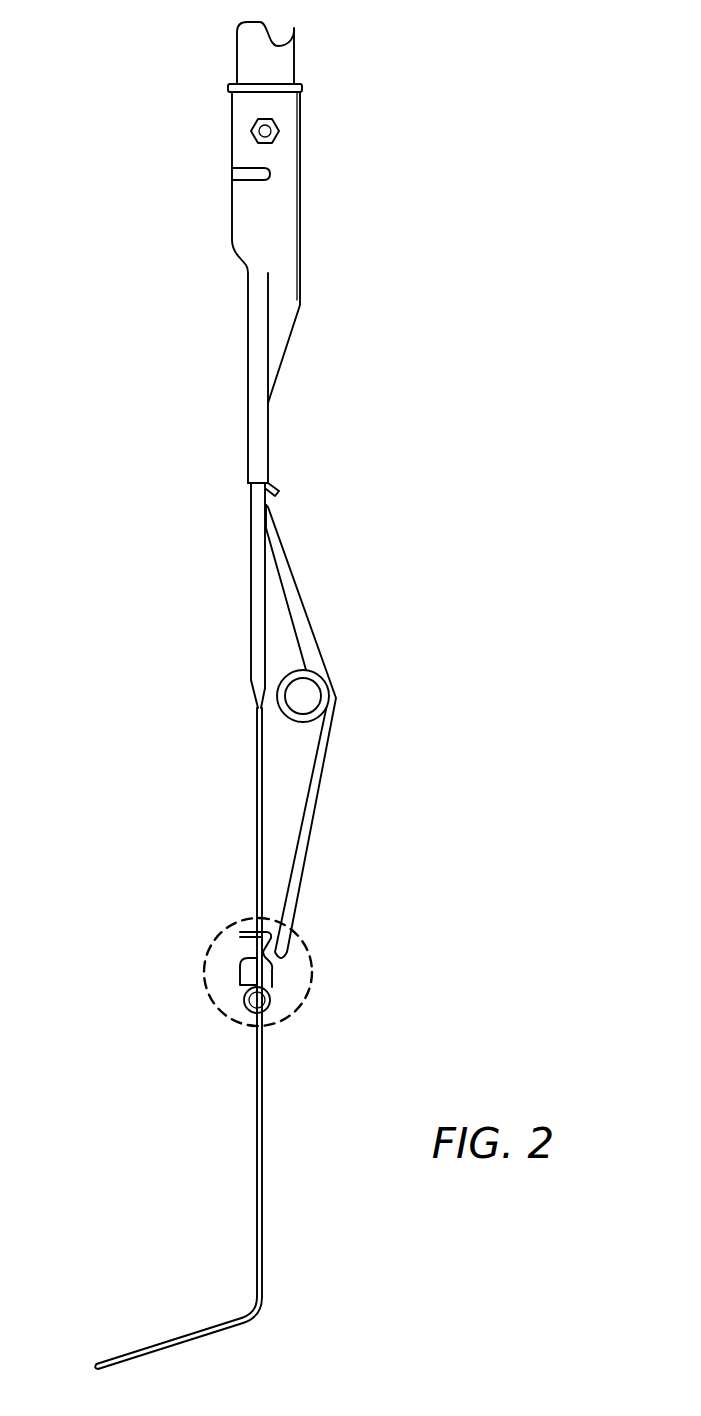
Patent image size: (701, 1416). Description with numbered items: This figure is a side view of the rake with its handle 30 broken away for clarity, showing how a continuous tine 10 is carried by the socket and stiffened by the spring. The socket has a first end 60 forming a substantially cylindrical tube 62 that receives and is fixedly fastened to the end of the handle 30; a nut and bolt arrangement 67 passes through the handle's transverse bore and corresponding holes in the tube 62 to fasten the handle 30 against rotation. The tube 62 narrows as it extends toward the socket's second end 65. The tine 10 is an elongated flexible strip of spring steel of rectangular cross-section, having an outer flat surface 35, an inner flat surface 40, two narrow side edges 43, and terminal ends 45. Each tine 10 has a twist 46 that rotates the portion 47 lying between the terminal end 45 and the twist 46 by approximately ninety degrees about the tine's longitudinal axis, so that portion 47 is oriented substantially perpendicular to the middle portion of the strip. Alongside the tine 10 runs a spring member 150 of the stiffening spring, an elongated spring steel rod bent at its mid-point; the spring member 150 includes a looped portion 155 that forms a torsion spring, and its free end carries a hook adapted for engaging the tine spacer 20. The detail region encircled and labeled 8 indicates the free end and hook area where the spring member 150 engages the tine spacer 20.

The tine 10 is at (278, 1156).
The handle 30 is at (232, 68).
The first end 60 is at (305, 82).
The cylindrical tube 62 is at (302, 149).
The nut and bolt arrangement 67 is at (245, 123).
The second end 65 is at (242, 448).
The outer flat surface 35 is at (258, 501).
The inner flat surface 40 is at (256, 744).
The twist 46 is at (251, 683).
The narrow side edge 43 is at (256, 818).
The spring member 150 is at (316, 803).
The looped portion 155 is at (332, 700).
The detail circle FIG. 8 is at (308, 948).
The tine spacer 20 is at (283, 998).
The tine portion 47 is at (270, 1280).
The terminal end 45 is at (93, 1365).